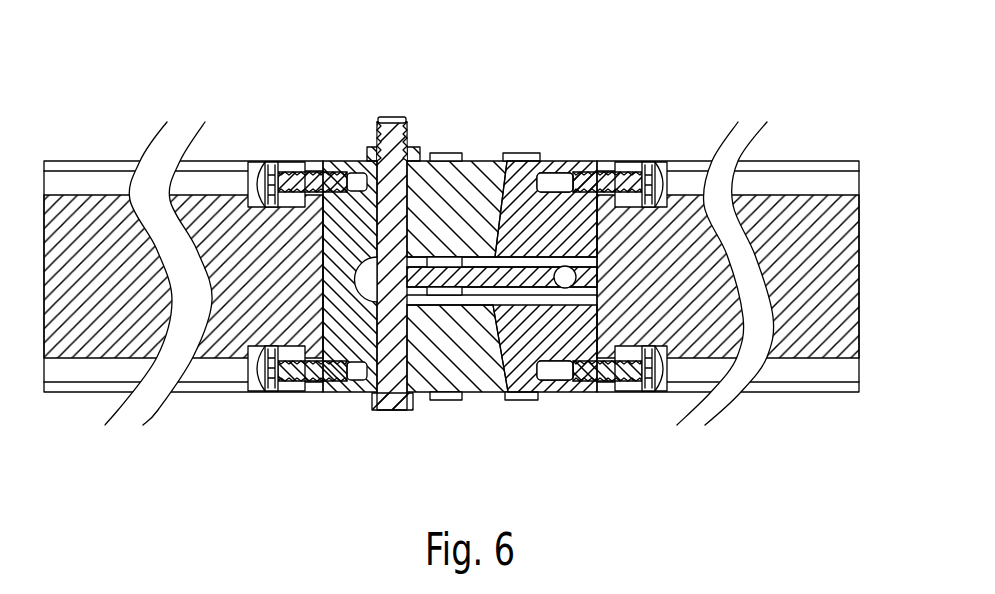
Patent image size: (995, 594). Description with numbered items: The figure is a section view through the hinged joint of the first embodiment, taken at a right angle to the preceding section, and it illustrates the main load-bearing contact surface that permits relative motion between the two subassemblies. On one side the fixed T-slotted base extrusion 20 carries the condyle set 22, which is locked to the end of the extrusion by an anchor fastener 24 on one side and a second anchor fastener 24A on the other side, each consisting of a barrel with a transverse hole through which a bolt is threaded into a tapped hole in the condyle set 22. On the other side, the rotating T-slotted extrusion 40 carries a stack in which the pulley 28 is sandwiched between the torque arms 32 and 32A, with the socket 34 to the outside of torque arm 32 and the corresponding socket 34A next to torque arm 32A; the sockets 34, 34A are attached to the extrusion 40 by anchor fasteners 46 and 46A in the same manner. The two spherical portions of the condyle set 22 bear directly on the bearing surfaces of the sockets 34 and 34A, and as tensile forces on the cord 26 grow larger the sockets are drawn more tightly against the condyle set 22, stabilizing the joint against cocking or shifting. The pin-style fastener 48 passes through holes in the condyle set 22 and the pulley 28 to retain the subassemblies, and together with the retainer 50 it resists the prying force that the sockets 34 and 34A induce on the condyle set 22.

The T-slotted base extrusion 20 is at (85, 347).
The rotating t-slotted extrusion 40 is at (782, 340).
The condyle set 22 is at (428, 362).
The pulley 28 is at (442, 277).
The cord 26 is at (570, 265).
The torque arm 32 is at (473, 260).
The torque arm 32A is at (502, 292).
The socket 34 is at (528, 215).
The socket 34A is at (563, 340).
The retainer 50 is at (367, 148).
The pin-style fastener 48 is at (380, 405).
The anchor fastener 24 is at (308, 163).
The anchor fastener 24A is at (298, 392).
The anchor fastener 46 is at (608, 190).
The anchor fastener 46A is at (612, 381).